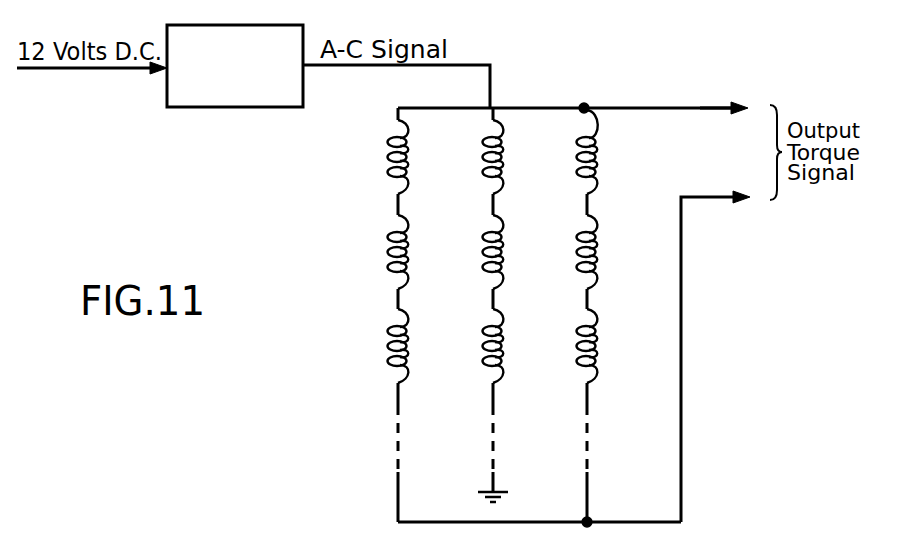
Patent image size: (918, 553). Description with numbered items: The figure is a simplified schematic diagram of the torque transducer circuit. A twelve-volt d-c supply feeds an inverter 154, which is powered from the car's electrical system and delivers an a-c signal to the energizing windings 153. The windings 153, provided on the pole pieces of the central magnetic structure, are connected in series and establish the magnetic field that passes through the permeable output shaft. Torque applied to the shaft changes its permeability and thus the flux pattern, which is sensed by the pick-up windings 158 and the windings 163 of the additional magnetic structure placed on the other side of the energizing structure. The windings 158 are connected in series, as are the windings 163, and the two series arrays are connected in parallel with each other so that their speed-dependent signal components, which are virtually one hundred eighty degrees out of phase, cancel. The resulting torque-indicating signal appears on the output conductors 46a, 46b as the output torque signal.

The inverter 154 is at (254, 108).
The series-connected windings 163 is at (422, 315).
The windings 153 is at (513, 305).
The windings 158 is at (611, 315).
The output conductor 46a is at (648, 107).
The output conductor 46b is at (690, 200).